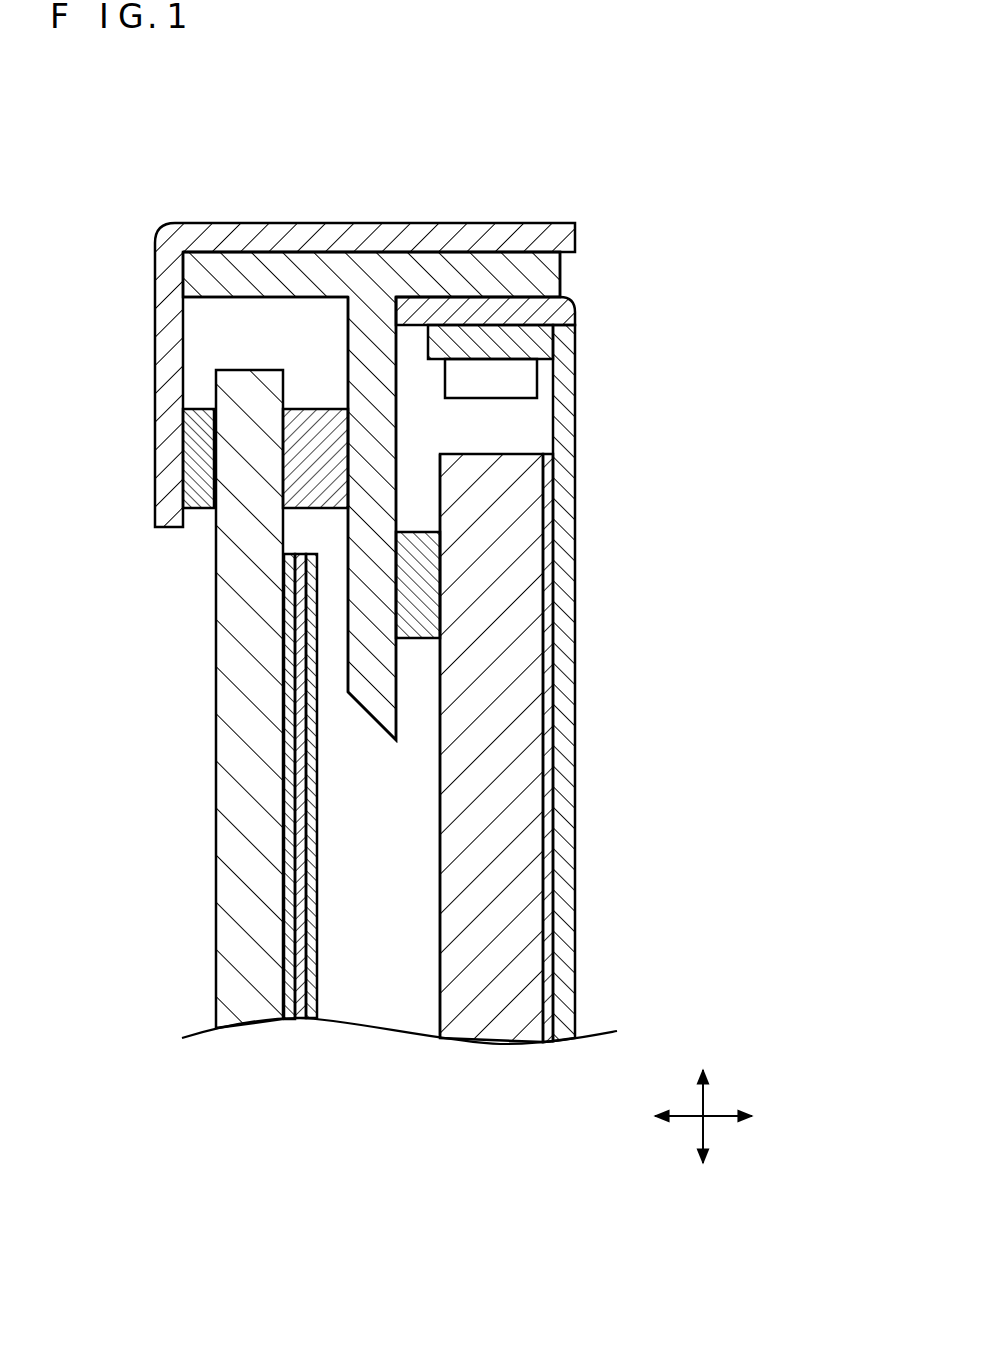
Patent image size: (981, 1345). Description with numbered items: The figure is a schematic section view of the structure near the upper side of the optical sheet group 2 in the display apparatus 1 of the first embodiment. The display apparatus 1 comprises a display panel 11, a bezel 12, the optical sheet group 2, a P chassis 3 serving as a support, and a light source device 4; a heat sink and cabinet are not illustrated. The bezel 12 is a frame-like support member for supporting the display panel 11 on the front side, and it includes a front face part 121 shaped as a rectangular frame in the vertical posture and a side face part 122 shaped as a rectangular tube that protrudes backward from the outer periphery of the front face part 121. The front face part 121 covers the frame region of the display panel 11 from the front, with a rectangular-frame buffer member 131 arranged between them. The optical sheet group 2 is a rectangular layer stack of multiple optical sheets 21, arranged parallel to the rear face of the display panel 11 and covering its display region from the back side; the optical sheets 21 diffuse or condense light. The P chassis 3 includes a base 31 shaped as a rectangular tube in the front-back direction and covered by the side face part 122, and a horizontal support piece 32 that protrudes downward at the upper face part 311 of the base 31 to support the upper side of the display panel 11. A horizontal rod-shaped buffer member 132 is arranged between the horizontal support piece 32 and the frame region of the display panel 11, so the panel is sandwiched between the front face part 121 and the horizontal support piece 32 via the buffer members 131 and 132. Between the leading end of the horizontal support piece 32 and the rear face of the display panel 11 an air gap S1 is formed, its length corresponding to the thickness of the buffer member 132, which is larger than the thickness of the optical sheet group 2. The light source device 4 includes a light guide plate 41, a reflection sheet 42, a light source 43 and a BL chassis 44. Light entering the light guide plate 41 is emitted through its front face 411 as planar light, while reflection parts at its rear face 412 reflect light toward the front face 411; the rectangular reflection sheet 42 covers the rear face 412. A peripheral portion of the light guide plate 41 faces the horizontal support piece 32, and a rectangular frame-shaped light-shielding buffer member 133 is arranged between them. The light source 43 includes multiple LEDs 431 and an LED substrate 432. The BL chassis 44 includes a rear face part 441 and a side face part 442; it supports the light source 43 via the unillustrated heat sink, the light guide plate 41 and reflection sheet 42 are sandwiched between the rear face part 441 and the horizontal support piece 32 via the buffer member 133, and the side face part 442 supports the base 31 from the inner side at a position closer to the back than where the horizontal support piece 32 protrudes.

The display apparatus 1 is at (52, 120).
The display panel 11 is at (227, 700).
The bezel 12 is at (153, 293).
The front face part 121 is at (168, 350).
The side face part 122 is at (245, 223).
The buffer member 131 is at (202, 418).
The buffer member 132 is at (320, 415).
The buffer member 133 is at (419, 635).
The optical sheet group 2 is at (217, 786).
The optical sheet 21 is at (312, 877).
The P chassis 3 is at (433, 122).
The base 31 is at (371, 209).
The upper face part 311 is at (360, 277).
The horizontal support piece 32 is at (380, 358).
The light source device 4 is at (603, 695).
The light guide plate 41 is at (458, 925).
The front face 411 is at (440, 853).
The rear face 412 is at (547, 777).
The reflection sheet 42 is at (613, 748).
The light source 43 is at (585, 377).
The LED 431 is at (508, 397).
The LED substrate 432 is at (538, 338).
The BL chassis 44 is at (542, 665).
The rear face part 441 is at (568, 477).
The side face part 442 is at (530, 305).
The air gap S1 is at (330, 633).